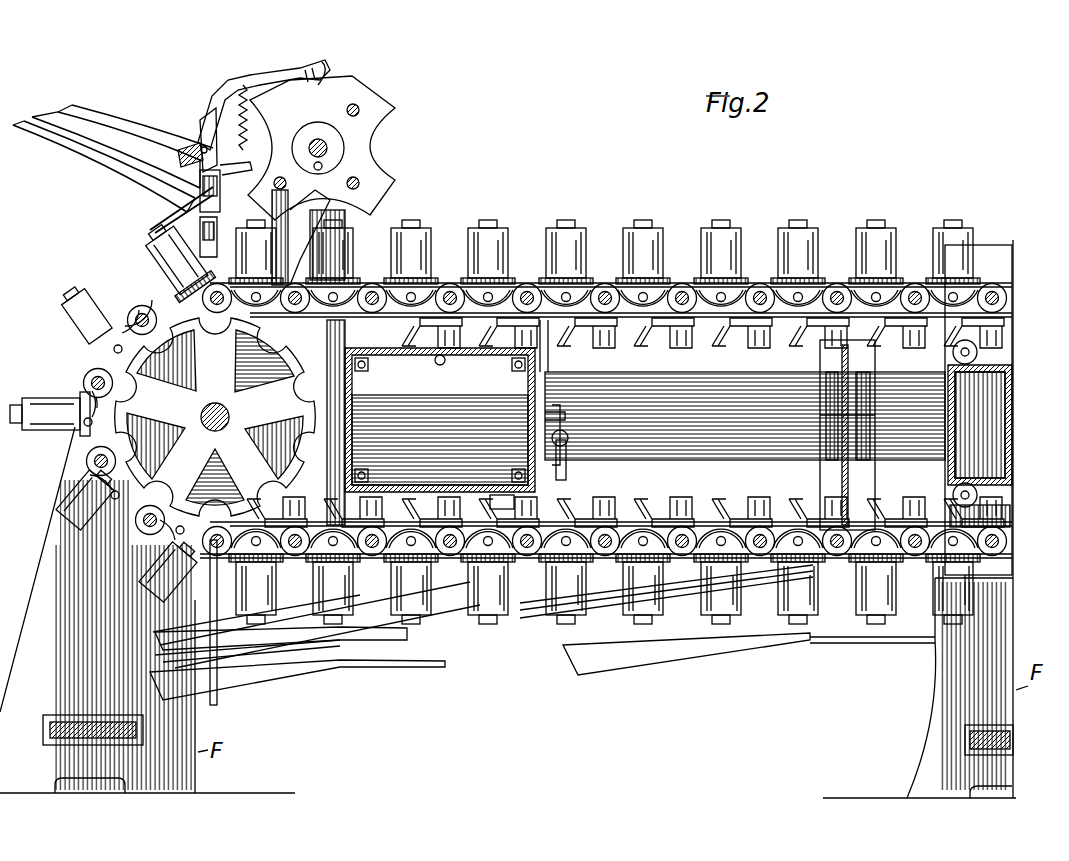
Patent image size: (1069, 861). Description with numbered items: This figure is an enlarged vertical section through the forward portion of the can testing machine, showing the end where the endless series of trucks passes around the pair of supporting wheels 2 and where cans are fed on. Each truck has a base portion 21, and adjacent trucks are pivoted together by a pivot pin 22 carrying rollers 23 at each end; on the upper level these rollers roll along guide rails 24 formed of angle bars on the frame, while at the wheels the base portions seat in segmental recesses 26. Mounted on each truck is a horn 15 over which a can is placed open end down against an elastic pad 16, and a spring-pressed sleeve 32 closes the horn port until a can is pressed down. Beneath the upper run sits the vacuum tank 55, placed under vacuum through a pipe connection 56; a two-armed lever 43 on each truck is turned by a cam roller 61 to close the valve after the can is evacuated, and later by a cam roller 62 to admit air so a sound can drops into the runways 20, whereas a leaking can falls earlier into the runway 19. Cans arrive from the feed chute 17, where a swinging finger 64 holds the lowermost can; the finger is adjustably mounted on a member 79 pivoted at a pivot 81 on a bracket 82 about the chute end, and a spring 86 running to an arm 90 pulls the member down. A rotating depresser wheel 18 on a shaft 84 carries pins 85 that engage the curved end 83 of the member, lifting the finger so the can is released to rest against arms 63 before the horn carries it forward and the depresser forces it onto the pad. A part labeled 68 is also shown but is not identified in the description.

The supporting wheels 2 is at (125, 442).
The horn 15 is at (428, 230).
The elastic pad 16 is at (540, 283).
The feed chute 17 is at (100, 130).
The rotating depresser wheel 18 is at (378, 112).
The runway 19 is at (696, 655).
The runways 20 is at (327, 670).
The base portion 21 is at (582, 320).
The pivot pin 22 is at (682, 297).
The rollers 23 is at (762, 326).
The guide rails 24 is at (678, 322).
The segmental recesses 26 is at (215, 417).
The sleeve 32 is at (642, 224).
The lever 43 is at (628, 327).
The vacuum tank 55 is at (431, 422).
The pipe connection 56 is at (572, 446).
The cam roller 61 is at (548, 345).
The cam roller 62 is at (500, 496).
The arms 63 is at (226, 188).
The swinging finger 64 is at (205, 165).
The holder 68 is at (292, 237).
The member 79 is at (243, 88).
The pivot 81 is at (200, 138).
The bracket 82 is at (180, 152).
The curved end 83 is at (318, 80).
The shaft 84 is at (330, 148).
The pins 85 is at (355, 108).
The spring 86 is at (243, 128).
The arm 90 is at (170, 245).